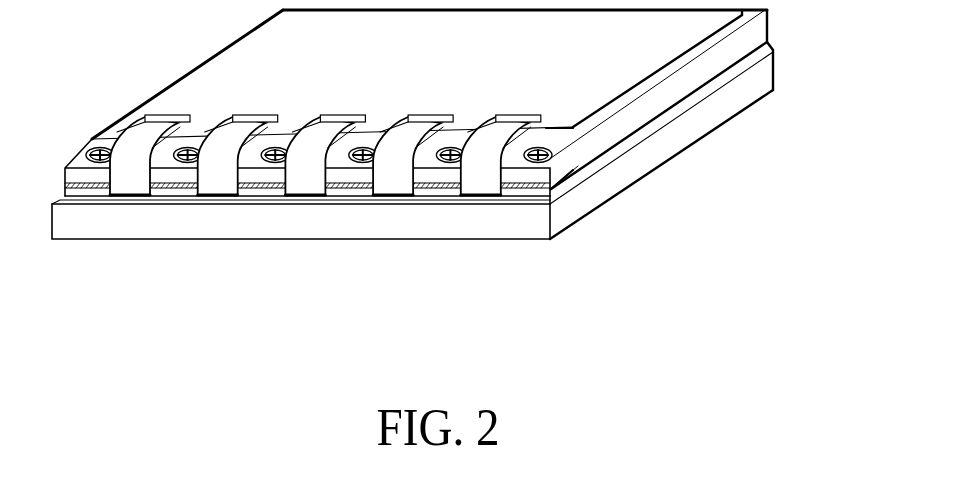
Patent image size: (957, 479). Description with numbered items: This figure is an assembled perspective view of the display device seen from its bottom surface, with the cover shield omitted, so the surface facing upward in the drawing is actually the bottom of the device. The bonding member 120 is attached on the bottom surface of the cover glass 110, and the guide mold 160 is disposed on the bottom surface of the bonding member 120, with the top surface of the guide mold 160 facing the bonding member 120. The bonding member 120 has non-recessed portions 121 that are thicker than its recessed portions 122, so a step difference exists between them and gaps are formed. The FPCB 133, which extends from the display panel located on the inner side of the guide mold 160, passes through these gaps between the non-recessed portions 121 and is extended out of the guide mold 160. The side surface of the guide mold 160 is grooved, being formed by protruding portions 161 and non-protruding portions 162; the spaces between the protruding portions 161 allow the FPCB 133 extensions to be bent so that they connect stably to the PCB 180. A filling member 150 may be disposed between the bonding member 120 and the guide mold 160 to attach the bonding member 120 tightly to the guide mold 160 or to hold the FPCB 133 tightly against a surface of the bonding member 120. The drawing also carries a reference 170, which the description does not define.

The cover glass 110 is at (533, 228).
The bonding member 120 is at (610, 152).
The non-recessed portions 121 is at (190, 198).
The recessed portions 122 is at (228, 198).
The FPCB 133 is at (130, 148).
The filling member 150 is at (573, 172).
The guide mold 160 is at (613, 178).
The protruding portions 161 is at (175, 177).
The non-protruding portions 162 is at (187, 133).
The protrusion 170 is at (555, 178).
The PCB 180 is at (590, 103).